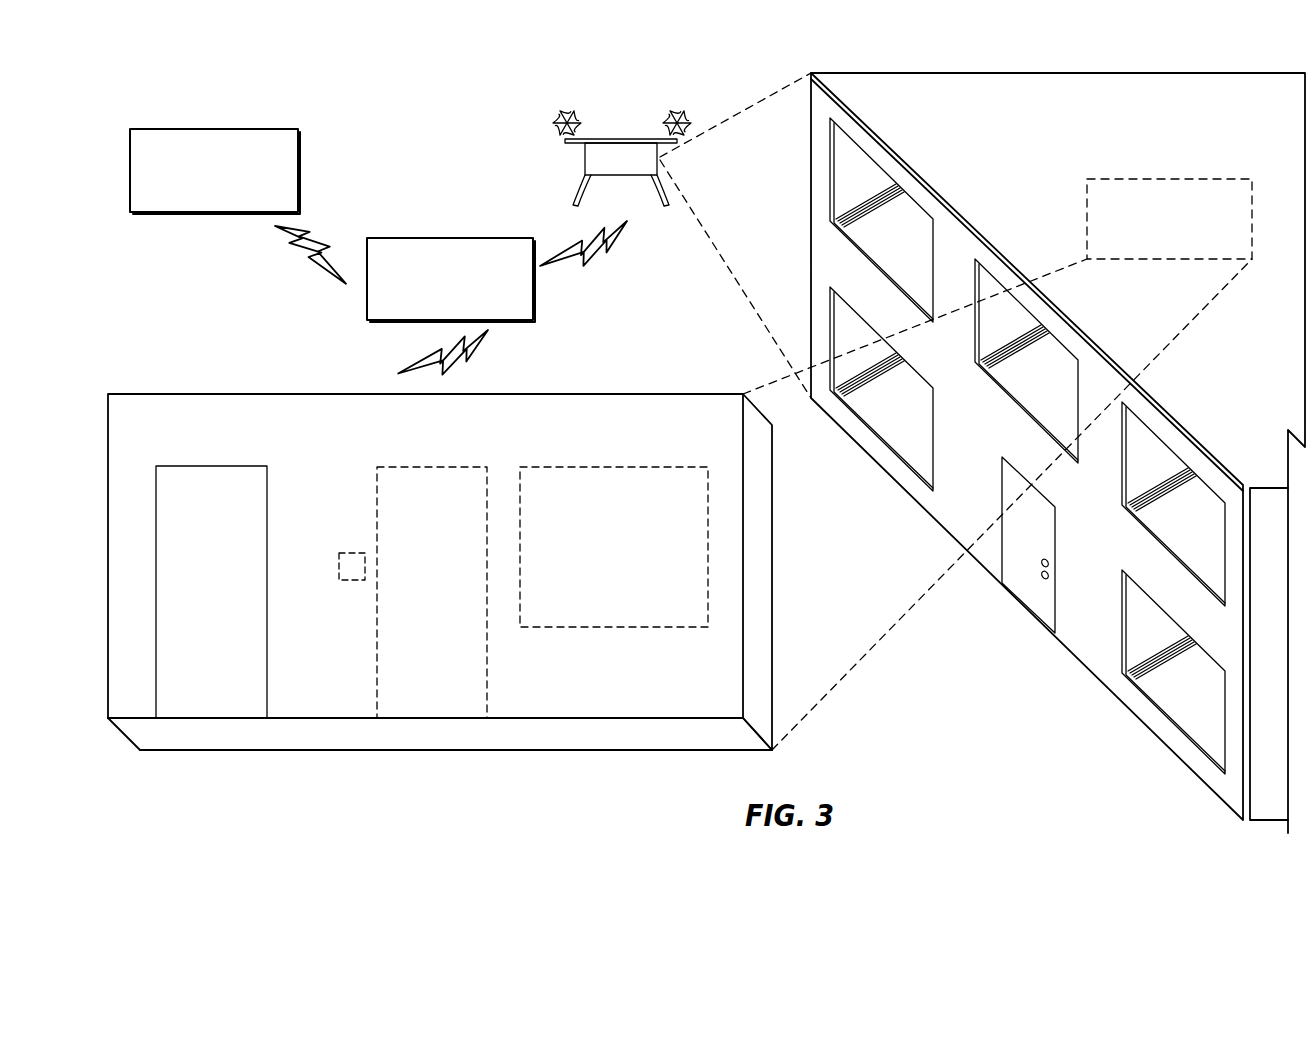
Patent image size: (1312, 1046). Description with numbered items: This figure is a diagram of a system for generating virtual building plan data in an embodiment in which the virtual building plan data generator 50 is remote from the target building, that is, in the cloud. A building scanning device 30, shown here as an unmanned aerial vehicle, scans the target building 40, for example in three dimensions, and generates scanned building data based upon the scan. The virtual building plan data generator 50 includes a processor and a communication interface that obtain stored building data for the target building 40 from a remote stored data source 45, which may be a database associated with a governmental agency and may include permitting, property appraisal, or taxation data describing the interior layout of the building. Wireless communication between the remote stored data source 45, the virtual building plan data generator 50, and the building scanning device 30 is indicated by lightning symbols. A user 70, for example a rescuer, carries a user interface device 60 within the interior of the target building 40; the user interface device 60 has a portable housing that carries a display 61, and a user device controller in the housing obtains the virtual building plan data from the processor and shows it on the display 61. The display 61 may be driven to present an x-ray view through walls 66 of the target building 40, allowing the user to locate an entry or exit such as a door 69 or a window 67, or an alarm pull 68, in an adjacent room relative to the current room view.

The building scanning device 30 is at (618, 133).
The target building 40 is at (1058, 453).
The remote stored data source 45 is at (194, 137).
The virtual building plan data generator 50 is at (439, 245).
The user interface device 60 is at (486, 553).
The display 61 is at (495, 743).
The walls 66 is at (230, 629).
The window 67 is at (685, 547).
The alarm pull 68 is at (330, 670).
The door 69 is at (349, 527).
The user 70 is at (1148, 180).